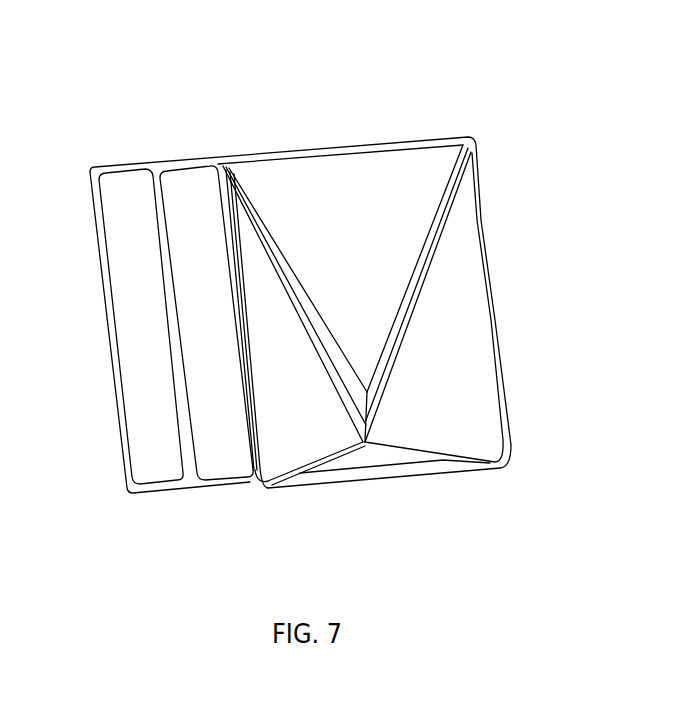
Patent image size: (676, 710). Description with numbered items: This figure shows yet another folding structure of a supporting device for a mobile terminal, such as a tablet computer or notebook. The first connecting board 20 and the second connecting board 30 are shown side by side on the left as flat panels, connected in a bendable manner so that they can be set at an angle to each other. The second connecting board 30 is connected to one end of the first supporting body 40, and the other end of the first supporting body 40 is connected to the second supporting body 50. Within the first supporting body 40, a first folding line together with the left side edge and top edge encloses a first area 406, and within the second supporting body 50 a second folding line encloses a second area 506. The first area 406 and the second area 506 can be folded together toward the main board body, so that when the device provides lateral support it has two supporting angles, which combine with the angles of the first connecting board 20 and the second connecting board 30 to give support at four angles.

The first connecting board 20 is at (152, 453).
The second connecting board 30 is at (223, 453).
The first supporting body 40 is at (300, 423).
The second supporting body 50 is at (477, 418).
The first area 406 is at (302, 290).
The second area 506 is at (413, 273).